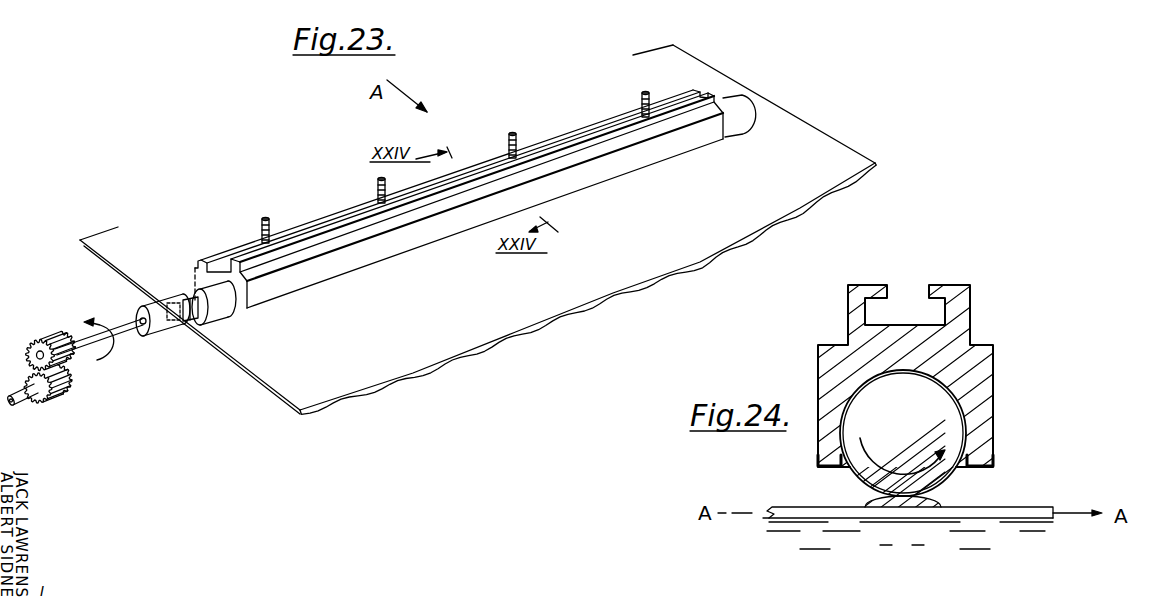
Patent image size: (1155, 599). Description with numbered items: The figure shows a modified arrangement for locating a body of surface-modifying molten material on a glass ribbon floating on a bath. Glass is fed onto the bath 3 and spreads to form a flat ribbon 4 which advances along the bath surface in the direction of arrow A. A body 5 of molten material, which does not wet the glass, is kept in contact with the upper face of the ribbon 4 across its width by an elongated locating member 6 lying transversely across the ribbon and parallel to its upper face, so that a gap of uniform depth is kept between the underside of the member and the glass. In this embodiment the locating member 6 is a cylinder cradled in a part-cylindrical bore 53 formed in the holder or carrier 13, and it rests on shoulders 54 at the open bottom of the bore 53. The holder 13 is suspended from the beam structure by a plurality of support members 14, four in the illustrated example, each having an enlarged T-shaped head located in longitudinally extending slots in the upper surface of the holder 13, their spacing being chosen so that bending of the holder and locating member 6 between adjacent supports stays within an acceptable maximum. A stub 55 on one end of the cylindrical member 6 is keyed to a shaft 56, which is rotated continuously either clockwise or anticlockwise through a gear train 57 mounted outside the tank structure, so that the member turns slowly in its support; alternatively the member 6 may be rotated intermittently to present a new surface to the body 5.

In FIG. 24, the bath 3 is at (906, 544).
In FIG. 24, the ribbon 4 is at (1018, 506).
In FIG. 24, the body of molten material 5 is at (864, 498).
In FIG. 23, the locating member 6 is at (213, 317).
In FIG. 24, the locating member 6 is at (952, 469).
In FIG. 23, the holder 13 is at (203, 262).
In FIG. 24, the holder 13 is at (988, 402).
In FIG. 23, the support members 14 is at (270, 229).
In FIG. 24, the part-cylindrical bore 53 is at (953, 390).
In FIG. 24, the shoulders 54 is at (822, 459).
In FIG. 23, the stub 55 is at (197, 322).
In FIG. 23, the shaft 56 is at (134, 337).
In FIG. 23, the gear train 57 is at (86, 365).